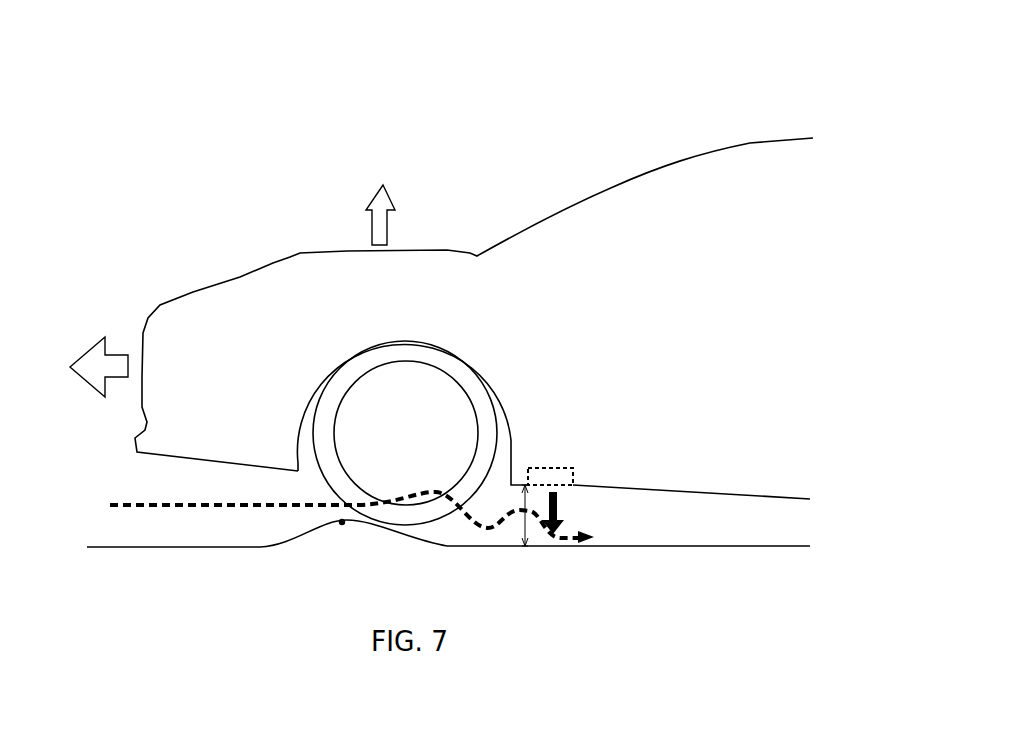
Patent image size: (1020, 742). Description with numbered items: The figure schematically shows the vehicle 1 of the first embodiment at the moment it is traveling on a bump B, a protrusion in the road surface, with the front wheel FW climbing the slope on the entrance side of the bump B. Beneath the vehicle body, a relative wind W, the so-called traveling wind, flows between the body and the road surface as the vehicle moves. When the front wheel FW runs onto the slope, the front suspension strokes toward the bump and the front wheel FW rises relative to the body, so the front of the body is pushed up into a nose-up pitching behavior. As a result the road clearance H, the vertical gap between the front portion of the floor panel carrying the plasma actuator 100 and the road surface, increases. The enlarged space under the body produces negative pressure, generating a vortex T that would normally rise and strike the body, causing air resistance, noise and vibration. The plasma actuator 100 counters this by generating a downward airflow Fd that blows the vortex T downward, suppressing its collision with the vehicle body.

The vehicle 1 is at (152, 157).
The bump B is at (342, 522).
The front wheel FW is at (427, 348).
The plasma actuator 100 is at (562, 472).
The relative wind W is at (346, 505).
The vortex T is at (460, 523).
The road clearance H is at (519, 532).
The downward airflow Fd is at (566, 513).